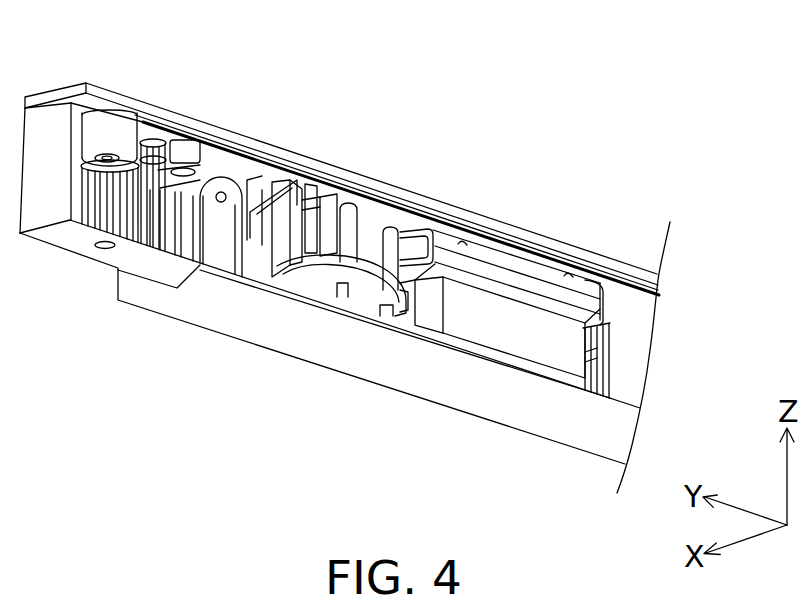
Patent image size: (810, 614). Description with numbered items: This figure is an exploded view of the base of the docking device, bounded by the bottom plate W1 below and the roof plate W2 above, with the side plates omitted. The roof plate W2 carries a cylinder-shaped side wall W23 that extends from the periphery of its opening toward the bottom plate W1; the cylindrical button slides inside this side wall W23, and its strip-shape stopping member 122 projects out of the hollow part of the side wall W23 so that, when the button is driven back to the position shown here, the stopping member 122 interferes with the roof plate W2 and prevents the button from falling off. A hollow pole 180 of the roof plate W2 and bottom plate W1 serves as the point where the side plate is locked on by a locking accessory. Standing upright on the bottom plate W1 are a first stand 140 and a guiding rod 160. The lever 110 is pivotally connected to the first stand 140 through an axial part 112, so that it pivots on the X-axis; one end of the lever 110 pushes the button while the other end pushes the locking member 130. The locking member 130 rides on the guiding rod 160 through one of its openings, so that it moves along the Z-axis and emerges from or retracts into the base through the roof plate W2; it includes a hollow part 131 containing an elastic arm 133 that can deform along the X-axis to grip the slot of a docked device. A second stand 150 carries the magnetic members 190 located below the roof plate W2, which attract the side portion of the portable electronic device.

The bottom plate W1 is at (458, 382).
The roof plate W2 is at (115, 100).
The cylinder-shaped side wall W23 is at (188, 147).
The lever 110 is at (262, 222).
The axial part 112 is at (225, 193).
The strip-shape stopping member 122 is at (155, 143).
The locking member 130 is at (305, 243).
The hollow part 131 is at (352, 245).
The elastic arm 133 is at (328, 207).
The first stand 140 is at (220, 248).
The second stand 150 is at (597, 303).
The guiding rod 160 is at (343, 298).
The hollow pole 180 is at (100, 208).
The magnetic members 190 is at (510, 252).